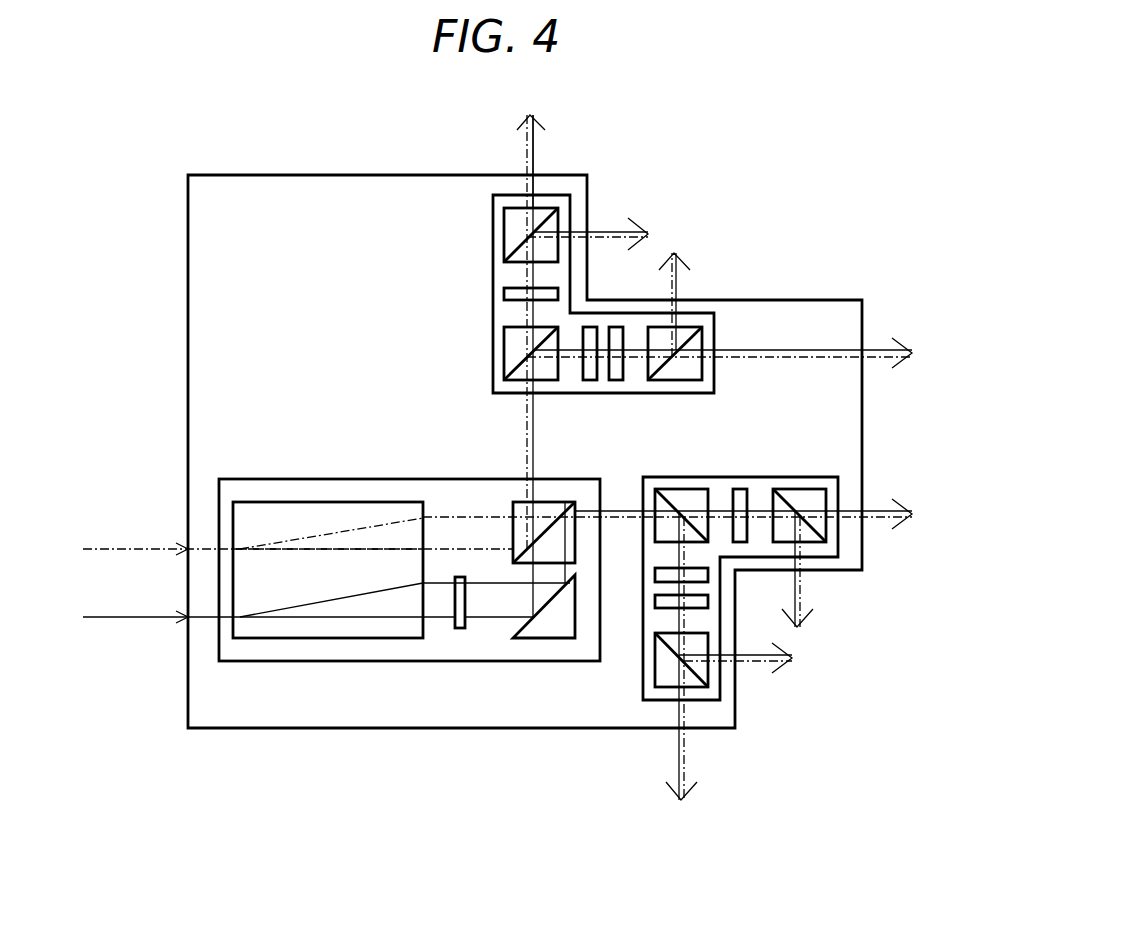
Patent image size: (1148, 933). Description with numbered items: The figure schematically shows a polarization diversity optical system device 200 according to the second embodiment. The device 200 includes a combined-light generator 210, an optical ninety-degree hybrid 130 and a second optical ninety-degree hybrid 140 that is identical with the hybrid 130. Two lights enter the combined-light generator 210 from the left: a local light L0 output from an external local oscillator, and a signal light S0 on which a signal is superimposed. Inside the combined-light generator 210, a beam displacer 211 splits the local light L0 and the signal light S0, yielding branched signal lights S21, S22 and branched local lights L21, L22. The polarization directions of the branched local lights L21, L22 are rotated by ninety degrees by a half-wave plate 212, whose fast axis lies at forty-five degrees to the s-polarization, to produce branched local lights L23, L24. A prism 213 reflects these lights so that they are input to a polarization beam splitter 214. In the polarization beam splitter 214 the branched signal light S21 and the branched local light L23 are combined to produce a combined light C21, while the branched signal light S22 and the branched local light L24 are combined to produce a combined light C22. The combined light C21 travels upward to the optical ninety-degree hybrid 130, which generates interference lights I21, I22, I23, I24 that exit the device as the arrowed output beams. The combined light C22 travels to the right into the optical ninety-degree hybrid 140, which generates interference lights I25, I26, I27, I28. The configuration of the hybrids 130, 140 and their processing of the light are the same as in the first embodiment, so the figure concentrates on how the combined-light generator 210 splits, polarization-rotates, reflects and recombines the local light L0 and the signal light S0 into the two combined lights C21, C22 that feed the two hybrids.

The polarization diversity optical system device 200 is at (292, 175).
The combined-light generator 210 is at (229, 478).
The beam displacer 211 is at (288, 502).
The half-wave plate 212 is at (460, 629).
The prism 213 is at (570, 639).
The polarization beam splitter 214 is at (518, 500).
The optical 90-degree hybrid 130 is at (493, 272).
The optical 90-degree hybrid 140 is at (758, 477).
The signal light S0 is at (115, 548).
The local light L0 is at (117, 620).
The branched signal light S21 is at (341, 548).
The branched signal light S22 is at (390, 518).
The branched local light L21 is at (290, 618).
The branched local light L22 is at (345, 598).
The branched local light L23 is at (490, 618).
The branched local light L24 is at (505, 618).
The combined light C21 is at (518, 413).
The combined light C22 is at (623, 498).
The interference light I21 is at (548, 152).
The interference light I22 is at (606, 213).
The interference light I23 is at (877, 338).
The interference light I24 is at (690, 283).
The interference light I25 is at (877, 498).
The interference light I26 is at (812, 587).
The interference light I27 is at (697, 750).
The interference light I28 is at (754, 672).